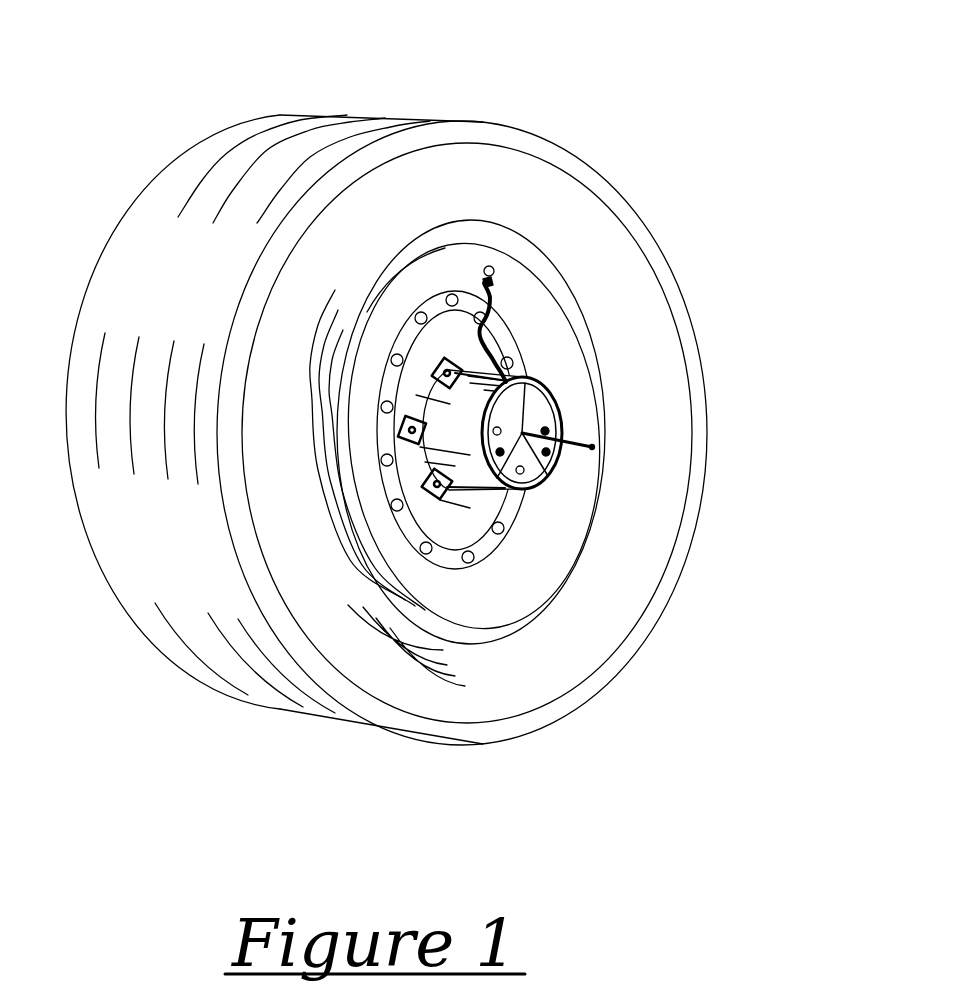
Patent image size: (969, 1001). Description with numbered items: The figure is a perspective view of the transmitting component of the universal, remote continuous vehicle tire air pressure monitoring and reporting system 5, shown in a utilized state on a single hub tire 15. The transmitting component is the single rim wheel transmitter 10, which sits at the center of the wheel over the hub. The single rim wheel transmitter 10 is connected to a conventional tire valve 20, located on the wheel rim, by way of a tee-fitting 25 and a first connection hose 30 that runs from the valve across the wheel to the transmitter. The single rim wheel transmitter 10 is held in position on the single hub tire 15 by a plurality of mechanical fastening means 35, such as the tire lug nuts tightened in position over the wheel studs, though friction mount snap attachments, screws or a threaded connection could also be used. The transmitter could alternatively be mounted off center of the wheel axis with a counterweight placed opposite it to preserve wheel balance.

The universal, remote continuous vehicle tire air pressure monitoring and reporting 5 is at (735, 625).
The single rim wheel transmitter 10 is at (560, 420).
The single hub tire 15 is at (655, 318).
The tire valve 20 is at (490, 268).
The tee-fitting 25 is at (482, 283).
The first connection hose 30 is at (505, 370).
The mechanical fastening means 35 is at (405, 435).